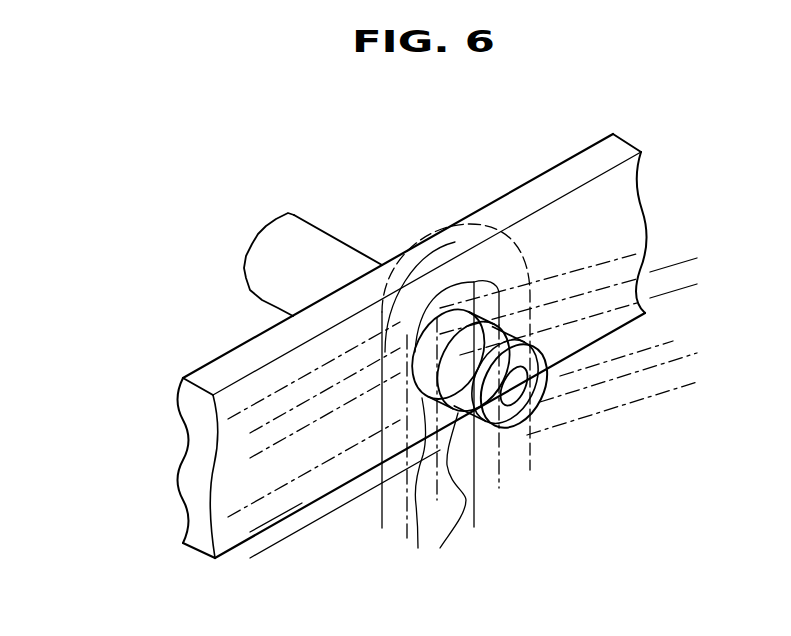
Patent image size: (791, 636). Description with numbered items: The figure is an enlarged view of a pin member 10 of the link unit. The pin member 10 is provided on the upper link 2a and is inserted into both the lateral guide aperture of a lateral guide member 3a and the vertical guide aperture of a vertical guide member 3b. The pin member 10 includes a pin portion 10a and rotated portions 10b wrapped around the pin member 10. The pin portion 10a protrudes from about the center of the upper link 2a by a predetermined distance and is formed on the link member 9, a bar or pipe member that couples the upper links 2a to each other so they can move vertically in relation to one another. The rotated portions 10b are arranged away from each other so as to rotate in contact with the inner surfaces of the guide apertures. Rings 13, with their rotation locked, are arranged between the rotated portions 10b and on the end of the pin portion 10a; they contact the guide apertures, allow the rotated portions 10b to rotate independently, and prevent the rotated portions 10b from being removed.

The upper link 2a is at (244, 358).
The lateral guide member 3a is at (661, 262).
The vertical guide member 3b is at (458, 242).
The link member 9 is at (300, 231).
The pin member 10 is at (518, 430).
The pin portion 10a is at (535, 407).
The rotated portion 10b is at (453, 431).
The ring 13 is at (515, 320).